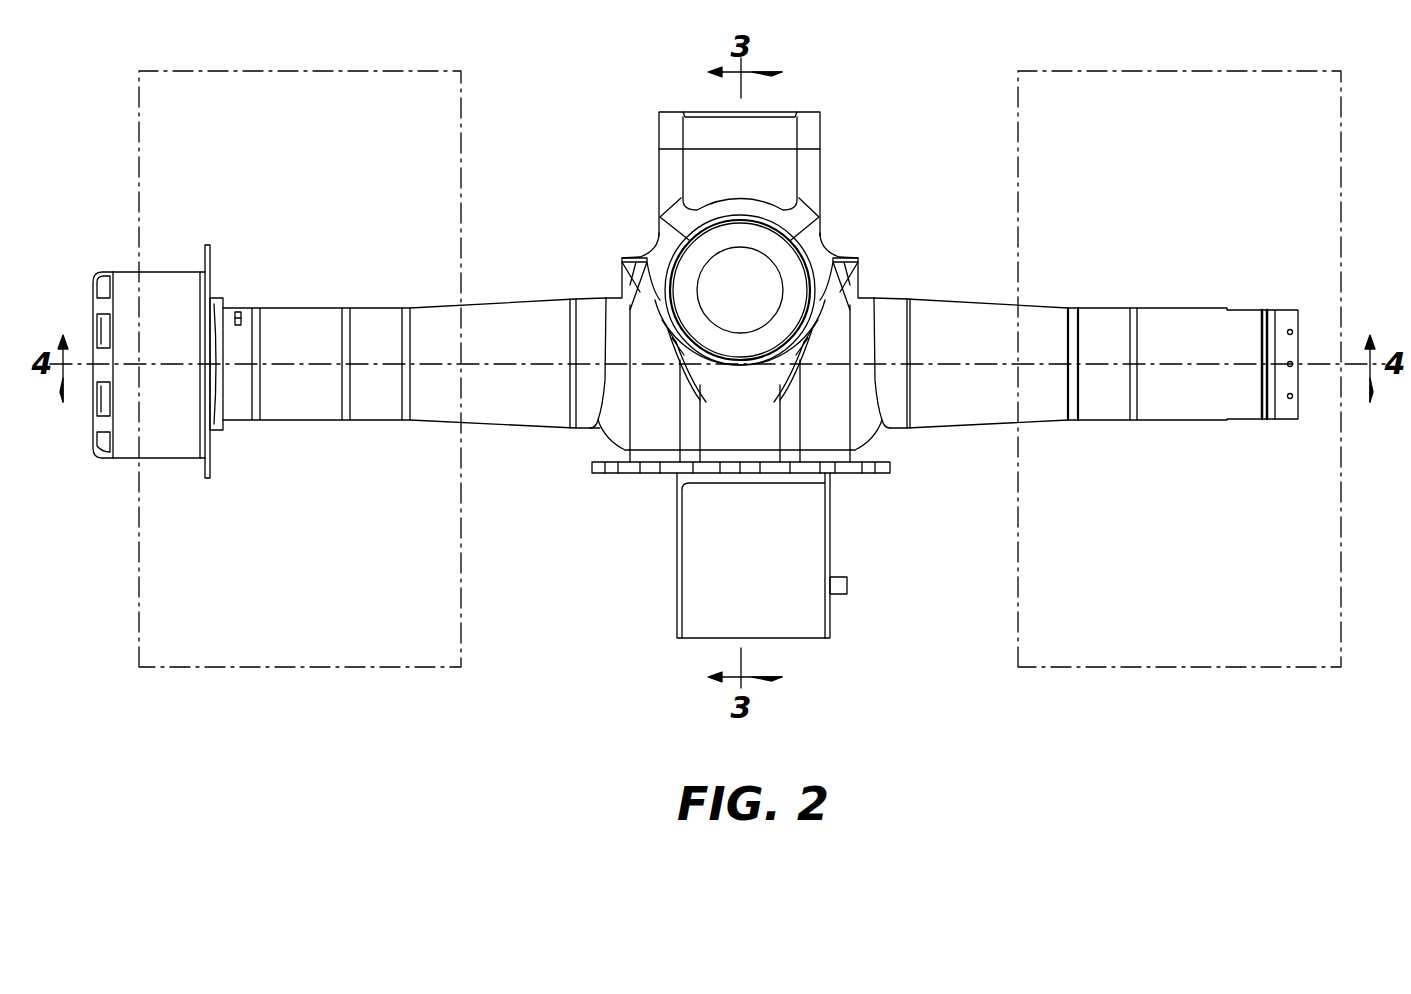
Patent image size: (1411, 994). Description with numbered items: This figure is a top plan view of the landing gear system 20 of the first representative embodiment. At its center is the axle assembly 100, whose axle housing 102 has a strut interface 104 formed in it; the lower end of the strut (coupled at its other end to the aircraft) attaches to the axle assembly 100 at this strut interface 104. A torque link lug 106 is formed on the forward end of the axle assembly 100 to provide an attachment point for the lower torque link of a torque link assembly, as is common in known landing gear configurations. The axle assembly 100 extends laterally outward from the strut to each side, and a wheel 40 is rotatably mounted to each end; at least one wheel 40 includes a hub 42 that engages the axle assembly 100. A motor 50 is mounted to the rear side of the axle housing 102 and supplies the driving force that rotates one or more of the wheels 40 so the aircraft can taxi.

The landing gear system 20 is at (592, 120).
The wheel 40 is at (139, 205).
The hub 42 is at (130, 458).
The motor 50 is at (830, 545).
The axle assembly 100 is at (720, 291).
The axle housing 102 is at (941, 298).
The strut interface 104 is at (820, 250).
The torque link lug 106 is at (822, 118).